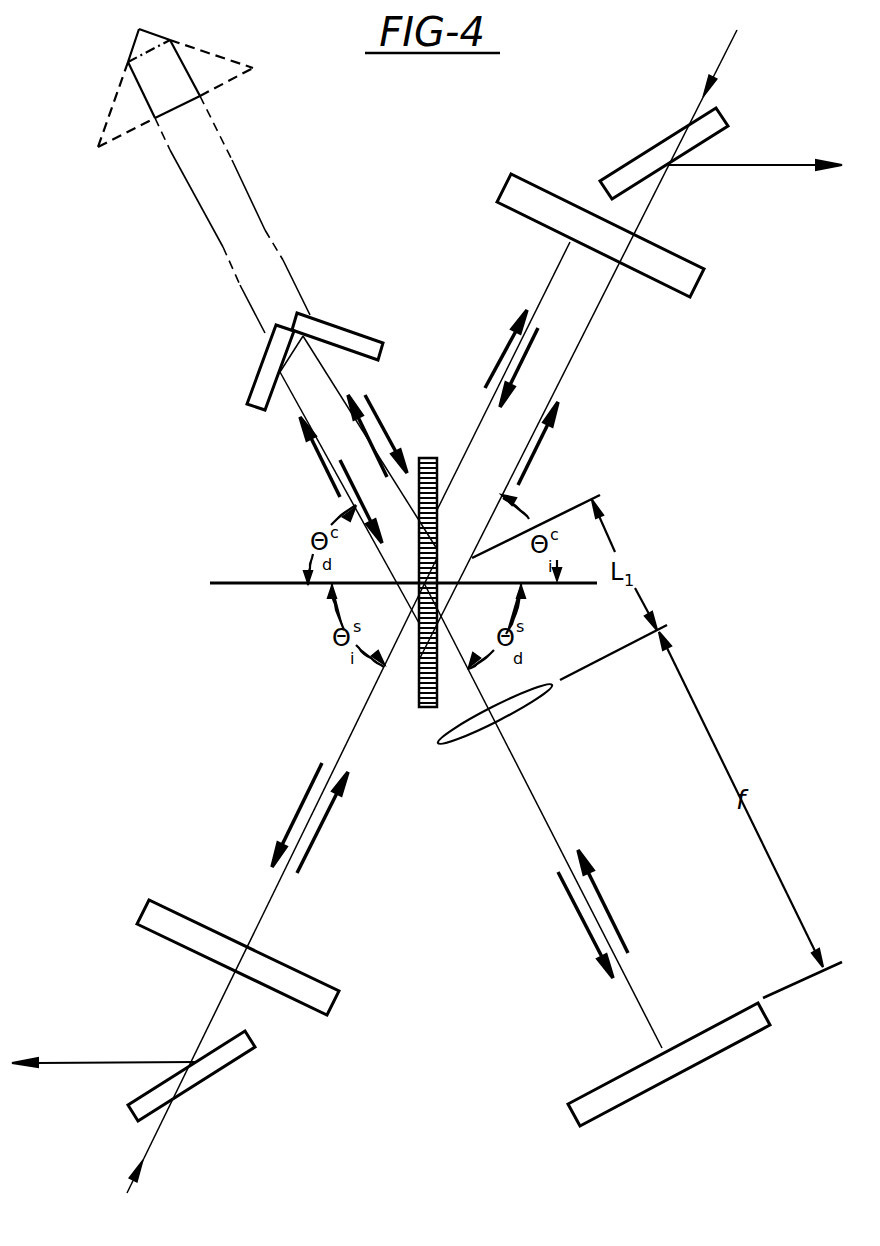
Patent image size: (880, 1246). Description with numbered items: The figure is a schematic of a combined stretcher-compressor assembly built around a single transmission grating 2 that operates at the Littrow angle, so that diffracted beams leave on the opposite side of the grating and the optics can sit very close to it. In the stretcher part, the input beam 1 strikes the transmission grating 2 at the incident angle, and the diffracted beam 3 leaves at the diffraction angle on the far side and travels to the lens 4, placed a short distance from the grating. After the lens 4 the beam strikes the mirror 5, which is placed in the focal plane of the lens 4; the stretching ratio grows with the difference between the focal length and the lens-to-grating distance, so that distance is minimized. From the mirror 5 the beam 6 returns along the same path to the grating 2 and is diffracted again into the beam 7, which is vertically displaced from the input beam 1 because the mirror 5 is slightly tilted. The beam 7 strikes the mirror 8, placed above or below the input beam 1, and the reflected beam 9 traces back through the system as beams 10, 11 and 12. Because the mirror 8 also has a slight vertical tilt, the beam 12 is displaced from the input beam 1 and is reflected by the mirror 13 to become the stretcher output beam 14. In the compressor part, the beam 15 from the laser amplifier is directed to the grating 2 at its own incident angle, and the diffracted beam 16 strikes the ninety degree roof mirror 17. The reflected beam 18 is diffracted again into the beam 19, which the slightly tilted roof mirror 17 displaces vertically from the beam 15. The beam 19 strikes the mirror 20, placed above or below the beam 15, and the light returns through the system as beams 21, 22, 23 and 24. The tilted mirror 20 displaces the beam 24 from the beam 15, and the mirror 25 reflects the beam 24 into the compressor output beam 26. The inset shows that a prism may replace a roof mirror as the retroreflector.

The input beam 1 is at (274, 879).
The transmission grating 2 is at (417, 596).
The diffracted beam 3 is at (578, 925).
The lens 4 is at (495, 713).
The mirror 5 is at (685, 1064).
The beam 6 is at (603, 901).
The beam 7 is at (297, 814).
The mirror 8 is at (229, 949).
The beam 9 is at (322, 822).
The beam 10 is at (568, 957).
The beam 11 is at (633, 905).
The beam 12 is at (260, 817).
The mirror 13 is at (197, 1076).
The output beam 14 is at (103, 1050).
The beam 15 is at (578, 334).
The diffracted beam 16 is at (311, 457).
The roof mirror 17 is at (315, 352).
The reflected beam 18 is at (387, 428).
The beam 19 is at (497, 349).
The mirror 20 is at (583, 231).
The beam 21 is at (528, 367).
The beam 22 is at (385, 436).
The beam 23 is at (370, 501).
The beam 24 is at (545, 443).
The mirror 25 is at (664, 153).
The output beam 26 is at (755, 149).